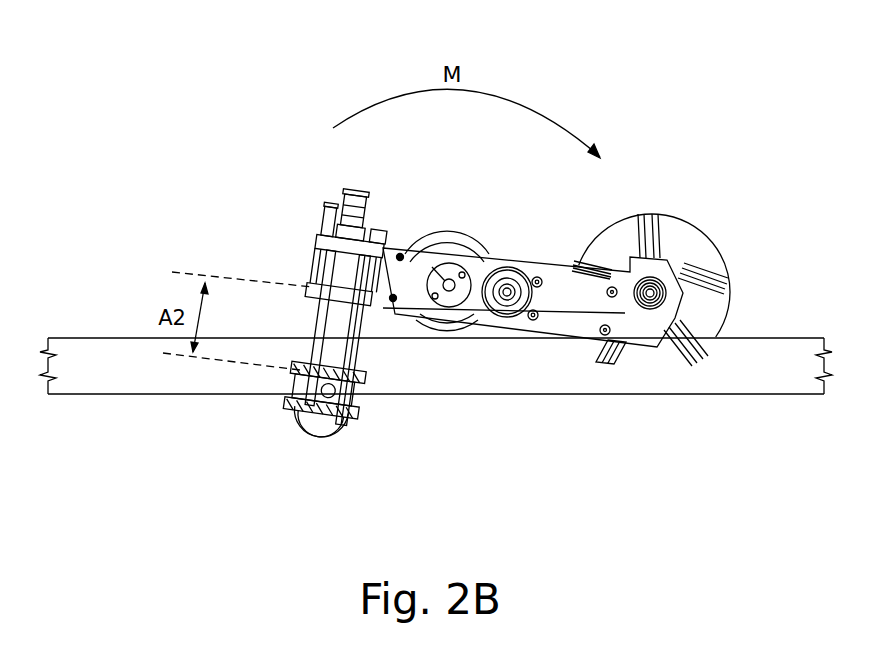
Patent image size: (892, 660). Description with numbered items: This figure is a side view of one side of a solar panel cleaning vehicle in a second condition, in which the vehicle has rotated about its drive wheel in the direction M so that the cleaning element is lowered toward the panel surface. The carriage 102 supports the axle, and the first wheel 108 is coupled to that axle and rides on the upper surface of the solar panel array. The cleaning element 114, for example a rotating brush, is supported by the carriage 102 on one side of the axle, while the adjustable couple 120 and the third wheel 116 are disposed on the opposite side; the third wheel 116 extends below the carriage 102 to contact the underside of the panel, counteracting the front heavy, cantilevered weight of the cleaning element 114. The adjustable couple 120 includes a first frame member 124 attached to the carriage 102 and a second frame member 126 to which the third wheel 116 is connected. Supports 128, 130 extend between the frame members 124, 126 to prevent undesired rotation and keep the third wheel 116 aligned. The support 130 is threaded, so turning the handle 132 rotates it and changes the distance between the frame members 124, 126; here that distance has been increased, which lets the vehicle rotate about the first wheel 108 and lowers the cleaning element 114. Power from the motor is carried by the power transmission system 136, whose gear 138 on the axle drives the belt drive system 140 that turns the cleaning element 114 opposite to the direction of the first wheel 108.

The carriage 102 is at (560, 342).
The first wheel 108 is at (477, 236).
The cleaning element 114 is at (687, 218).
The third wheel 116 is at (312, 438).
The adjustable couple 120 is at (229, 256).
The first frame member 124 is at (316, 240).
The second frame member 126 is at (360, 410).
The support 128 is at (303, 352).
The support 130 is at (360, 360).
The handle 132 is at (360, 185).
The power transmission system 136 is at (527, 247).
The gear 138 is at (443, 252).
The belt drive system 140 is at (623, 310).